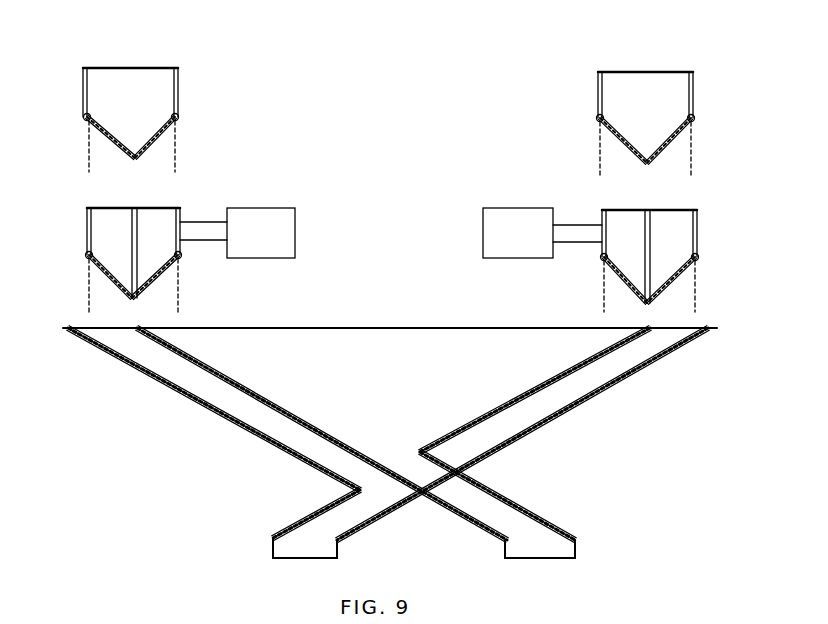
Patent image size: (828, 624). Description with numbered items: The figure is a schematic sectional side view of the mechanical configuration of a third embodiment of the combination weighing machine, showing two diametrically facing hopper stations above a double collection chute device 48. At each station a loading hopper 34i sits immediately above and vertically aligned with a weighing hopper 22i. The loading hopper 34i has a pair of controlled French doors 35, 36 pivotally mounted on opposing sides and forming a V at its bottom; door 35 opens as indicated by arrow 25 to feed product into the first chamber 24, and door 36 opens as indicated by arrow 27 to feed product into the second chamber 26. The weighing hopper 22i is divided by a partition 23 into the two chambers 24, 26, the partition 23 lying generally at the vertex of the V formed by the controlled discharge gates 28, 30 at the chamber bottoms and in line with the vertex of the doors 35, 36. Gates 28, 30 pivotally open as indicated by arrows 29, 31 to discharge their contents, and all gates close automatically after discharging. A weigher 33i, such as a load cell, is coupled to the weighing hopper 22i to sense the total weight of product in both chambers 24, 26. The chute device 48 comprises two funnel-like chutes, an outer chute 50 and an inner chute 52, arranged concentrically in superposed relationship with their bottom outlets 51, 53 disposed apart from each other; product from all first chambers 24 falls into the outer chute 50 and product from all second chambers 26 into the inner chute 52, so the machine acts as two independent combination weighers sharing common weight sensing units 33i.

The loading hopper 34i is at (132, 68).
The French door 35 is at (100, 136).
The French door 36 is at (162, 138).
The arrow 25 is at (115, 168).
The arrow 27 is at (176, 164).
The weighing hopper 22i is at (113, 207).
The first chamber 24 is at (100, 227).
The second chamber 26 is at (170, 223).
The partition 23 is at (137, 230).
The discharge gate 28 is at (107, 280).
The discharge gate 30 is at (160, 280).
The arrow 29 is at (94, 304).
The arrow 31 is at (170, 304).
The weigher 33i is at (297, 232).
The double collection chute device 48 is at (412, 300).
The inner chute 52 is at (266, 338).
The outer chute 50 is at (200, 397).
The bottom outlet 51 is at (283, 549).
The bottom outlet 53 is at (570, 549).